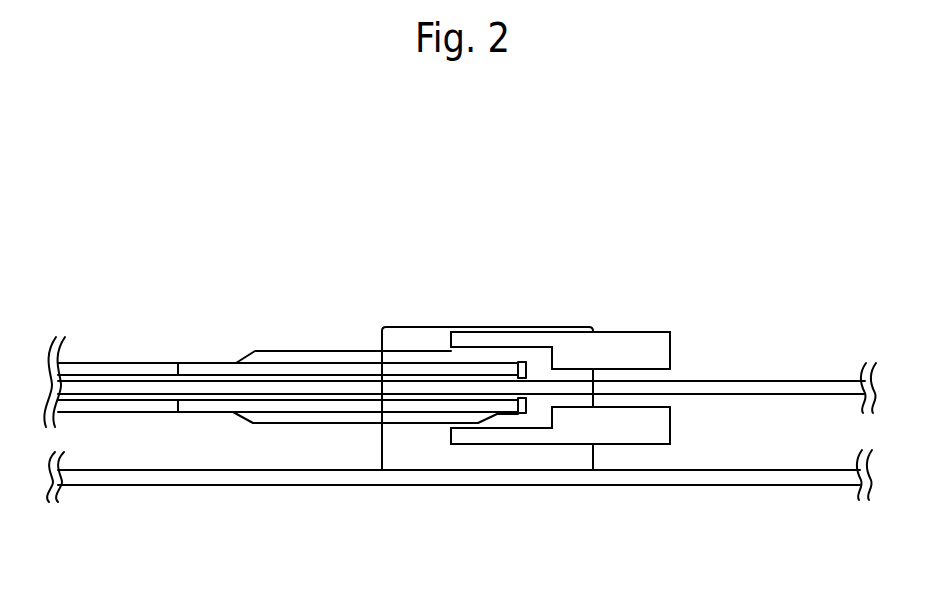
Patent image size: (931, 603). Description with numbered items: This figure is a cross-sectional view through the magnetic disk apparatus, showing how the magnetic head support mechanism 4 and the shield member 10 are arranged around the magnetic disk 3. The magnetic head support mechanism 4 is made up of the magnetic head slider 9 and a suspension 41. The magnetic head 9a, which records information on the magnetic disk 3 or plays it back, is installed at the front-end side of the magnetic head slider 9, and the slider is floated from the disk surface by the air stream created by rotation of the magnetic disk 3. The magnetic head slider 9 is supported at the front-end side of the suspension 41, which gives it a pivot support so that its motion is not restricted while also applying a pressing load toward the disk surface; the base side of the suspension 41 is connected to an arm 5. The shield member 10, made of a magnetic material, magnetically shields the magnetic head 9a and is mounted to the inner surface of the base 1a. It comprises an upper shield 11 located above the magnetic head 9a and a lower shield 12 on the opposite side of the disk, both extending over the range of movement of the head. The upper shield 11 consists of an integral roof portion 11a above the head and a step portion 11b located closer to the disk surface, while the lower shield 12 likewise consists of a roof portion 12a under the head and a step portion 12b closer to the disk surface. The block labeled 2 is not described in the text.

The base 1a is at (247, 480).
The housing block 2 is at (508, 460).
The magnetic disk 3 is at (787, 388).
The magnetic head support mechanism 4 is at (177, 344).
The arm 5 is at (118, 368).
The magnetic head slider 9 is at (465, 373).
The magnetic head 9a is at (527, 372).
The shield member 10 is at (612, 308).
The upper shield 11 is at (647, 330).
The roof portion 11a is at (497, 343).
The step portion 11b is at (660, 352).
The lower shield 12 is at (630, 447).
The roof portion 12a is at (463, 437).
The step portion 12b is at (653, 427).
The suspension 41 is at (293, 360).